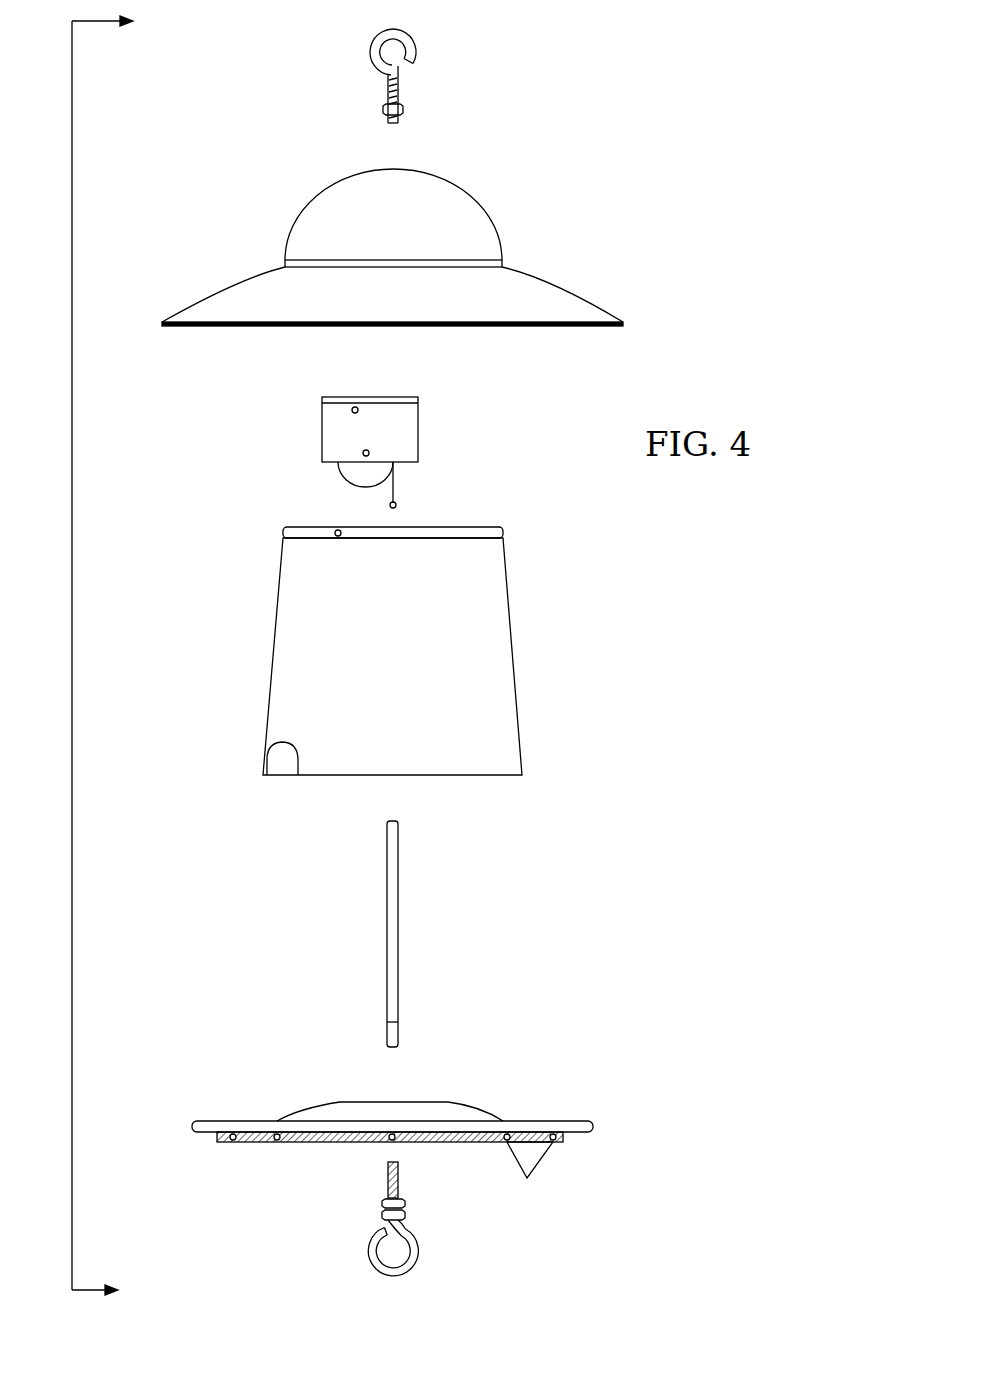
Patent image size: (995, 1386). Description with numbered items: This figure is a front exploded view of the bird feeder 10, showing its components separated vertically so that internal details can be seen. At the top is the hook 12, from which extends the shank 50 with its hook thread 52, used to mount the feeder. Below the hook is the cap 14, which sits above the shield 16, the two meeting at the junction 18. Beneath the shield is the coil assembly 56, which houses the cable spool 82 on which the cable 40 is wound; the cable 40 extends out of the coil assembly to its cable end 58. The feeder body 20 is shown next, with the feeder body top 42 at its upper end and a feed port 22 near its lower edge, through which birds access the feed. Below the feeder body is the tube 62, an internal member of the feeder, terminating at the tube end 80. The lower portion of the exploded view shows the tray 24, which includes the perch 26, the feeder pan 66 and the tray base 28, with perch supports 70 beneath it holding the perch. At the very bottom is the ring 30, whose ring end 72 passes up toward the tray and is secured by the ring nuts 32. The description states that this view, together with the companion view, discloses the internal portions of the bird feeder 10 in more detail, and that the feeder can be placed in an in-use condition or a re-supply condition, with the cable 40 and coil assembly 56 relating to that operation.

The bird feeder 10 is at (72, 607).
The hook 12 is at (414, 72).
The cap 14 is at (448, 202).
The shield 16 is at (557, 300).
The junction 18 is at (503, 264).
The feeder body 20 is at (488, 637).
The feed port 22 is at (282, 760).
The tray 24 is at (406, 1135).
The perch 26 is at (593, 1121).
The tray base 28 is at (322, 1142).
The ring 30 is at (430, 1235).
The ring nuts 32 is at (405, 1203).
The cable 40 is at (398, 485).
The feeder body top 42 is at (503, 533).
The shank 50 is at (388, 93).
The hook thread 52 is at (403, 110).
The coil assembly 56 is at (316, 417).
The cable end 58 is at (397, 505).
The tube 62 is at (398, 913).
The feeder pan 66 is at (468, 1108).
The perch supports 70 is at (530, 1176).
The ring end 72 is at (398, 1185).
The tube end 80 is at (398, 1038).
The cable spool 82 is at (345, 472).